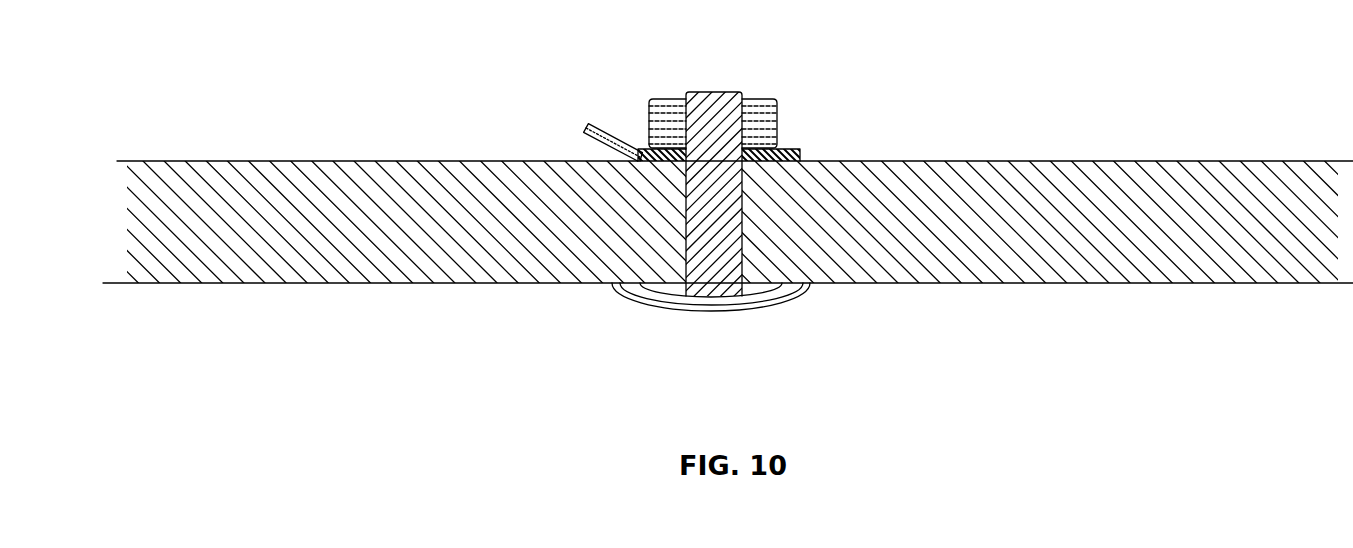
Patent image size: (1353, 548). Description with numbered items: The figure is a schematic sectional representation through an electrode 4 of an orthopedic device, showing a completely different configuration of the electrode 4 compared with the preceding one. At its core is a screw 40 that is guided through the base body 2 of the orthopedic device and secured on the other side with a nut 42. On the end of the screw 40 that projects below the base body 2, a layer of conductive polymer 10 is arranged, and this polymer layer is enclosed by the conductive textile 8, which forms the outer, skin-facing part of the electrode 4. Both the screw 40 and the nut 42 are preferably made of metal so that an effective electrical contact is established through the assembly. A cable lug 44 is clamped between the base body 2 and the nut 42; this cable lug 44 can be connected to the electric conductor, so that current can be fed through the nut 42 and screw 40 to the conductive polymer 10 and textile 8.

The base body 2 is at (1048, 195).
The electrode 4 is at (803, 70).
The conductive textile 8 is at (692, 310).
The layer of conductive polymer 10 is at (733, 303).
The screw 40 is at (733, 207).
The nut 42 is at (662, 107).
The cable lug 44 is at (595, 120).